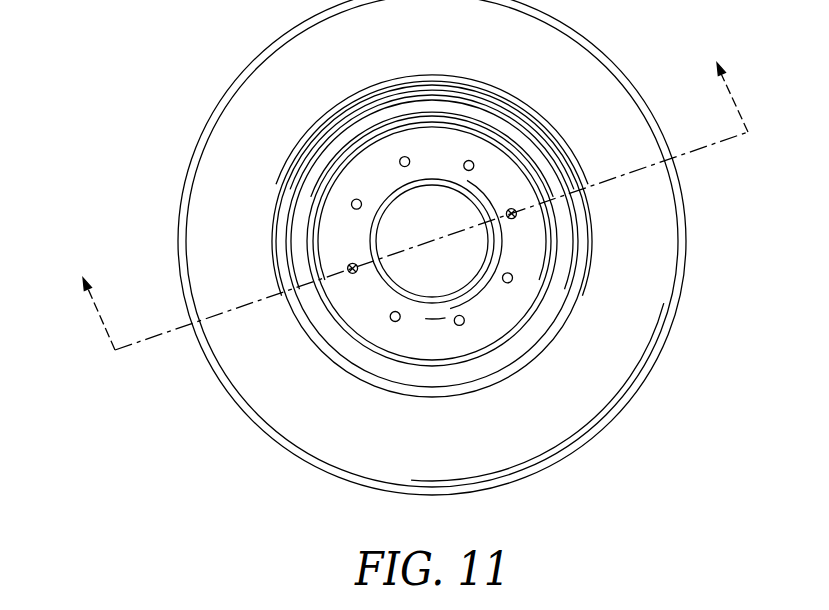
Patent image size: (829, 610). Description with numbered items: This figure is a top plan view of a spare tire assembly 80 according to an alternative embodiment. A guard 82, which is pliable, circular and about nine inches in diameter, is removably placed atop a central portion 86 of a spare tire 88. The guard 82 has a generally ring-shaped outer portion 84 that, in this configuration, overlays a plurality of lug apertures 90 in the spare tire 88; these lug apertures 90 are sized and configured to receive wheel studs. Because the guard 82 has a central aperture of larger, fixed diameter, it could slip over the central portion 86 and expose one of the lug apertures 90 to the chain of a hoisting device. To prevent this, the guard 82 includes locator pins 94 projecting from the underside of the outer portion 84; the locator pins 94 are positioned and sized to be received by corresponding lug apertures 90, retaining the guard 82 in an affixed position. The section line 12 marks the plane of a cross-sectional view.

The spare tire assembly 80 is at (116, 56).
The guard 82 is at (503, 181).
The outer portion 84 is at (378, 166).
The central portion 86 is at (388, 370).
The spare tire 88 is at (656, 367).
The lug apertures 90 is at (403, 157).
The locator pins 94 is at (517, 213).
The section line 12- 12 is at (410, 193).